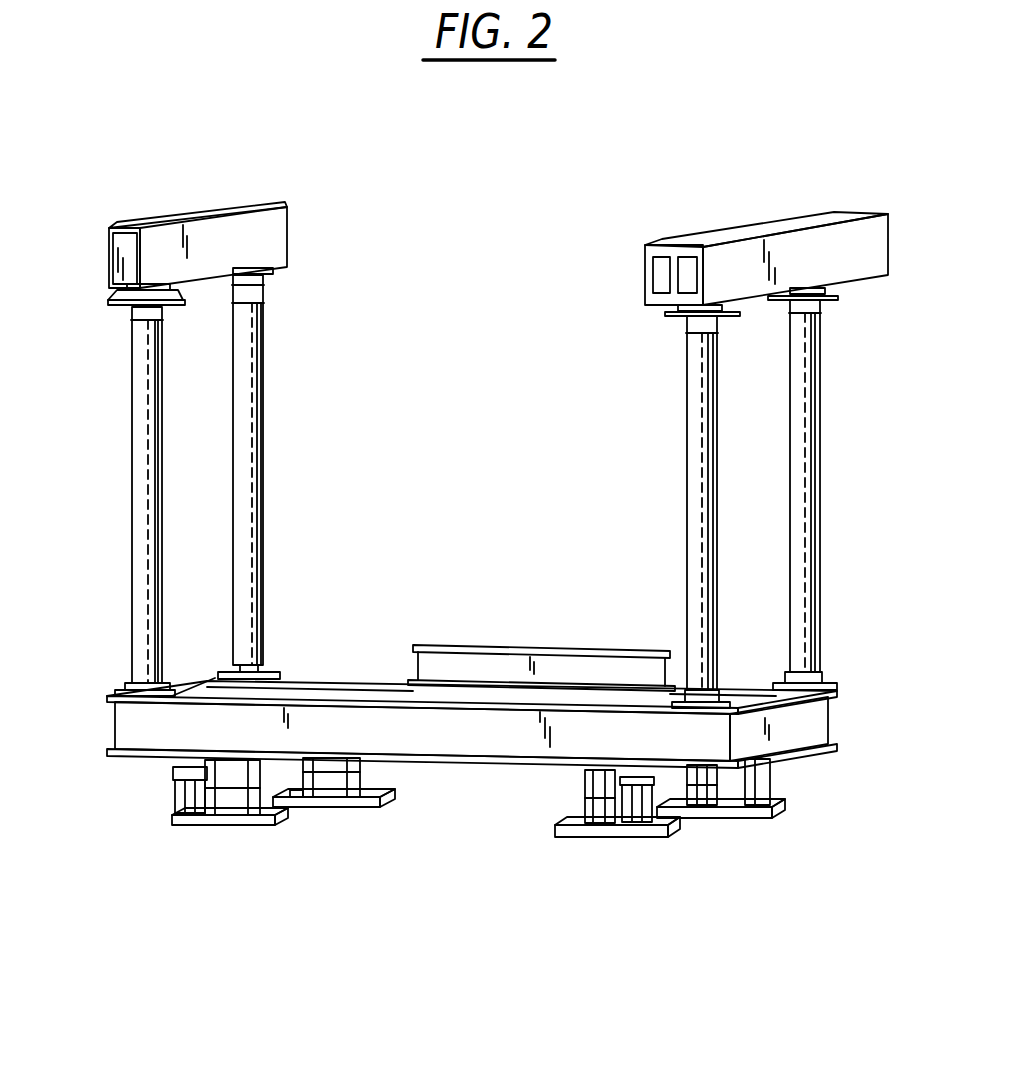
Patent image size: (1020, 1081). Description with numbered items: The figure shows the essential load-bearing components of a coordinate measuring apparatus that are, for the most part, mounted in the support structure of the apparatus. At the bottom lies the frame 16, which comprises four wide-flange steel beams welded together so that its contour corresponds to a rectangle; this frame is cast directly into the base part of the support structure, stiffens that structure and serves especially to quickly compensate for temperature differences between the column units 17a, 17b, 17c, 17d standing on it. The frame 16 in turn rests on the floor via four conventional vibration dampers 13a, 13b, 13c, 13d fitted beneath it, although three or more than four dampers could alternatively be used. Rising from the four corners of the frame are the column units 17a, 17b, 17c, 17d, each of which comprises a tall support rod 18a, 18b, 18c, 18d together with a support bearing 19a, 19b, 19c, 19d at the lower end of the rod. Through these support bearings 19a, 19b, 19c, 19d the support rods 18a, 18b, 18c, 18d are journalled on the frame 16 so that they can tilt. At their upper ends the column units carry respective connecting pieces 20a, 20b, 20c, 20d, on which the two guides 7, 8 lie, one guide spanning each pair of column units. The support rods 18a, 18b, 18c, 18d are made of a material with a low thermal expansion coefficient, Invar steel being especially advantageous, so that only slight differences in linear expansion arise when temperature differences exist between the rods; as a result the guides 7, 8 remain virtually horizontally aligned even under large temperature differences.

The guide 7 is at (218, 218).
The guide 8 is at (768, 227).
The vibration damper 13a is at (228, 797).
The vibration damper 13b is at (330, 782).
The vibration damper 13c is at (604, 812).
The vibration damper 13d is at (715, 793).
The frame 16 is at (490, 730).
The column unit 17a is at (130, 499).
The column unit 17b is at (258, 459).
The column unit 17c is at (690, 512).
The column unit 17d is at (805, 474).
The support rod 18a is at (138, 390).
The support rod 18b is at (248, 357).
The support rod 18c is at (695, 393).
The support rod 18d is at (802, 385).
The support bearing 19a is at (131, 683).
The support bearing 19b is at (250, 668).
The support bearing 19c is at (712, 688).
The support bearing 19d is at (815, 682).
The connecting piece 20a is at (122, 297).
The connecting piece 20b is at (270, 277).
The connecting piece 20c is at (685, 313).
The connecting piece 20d is at (835, 297).